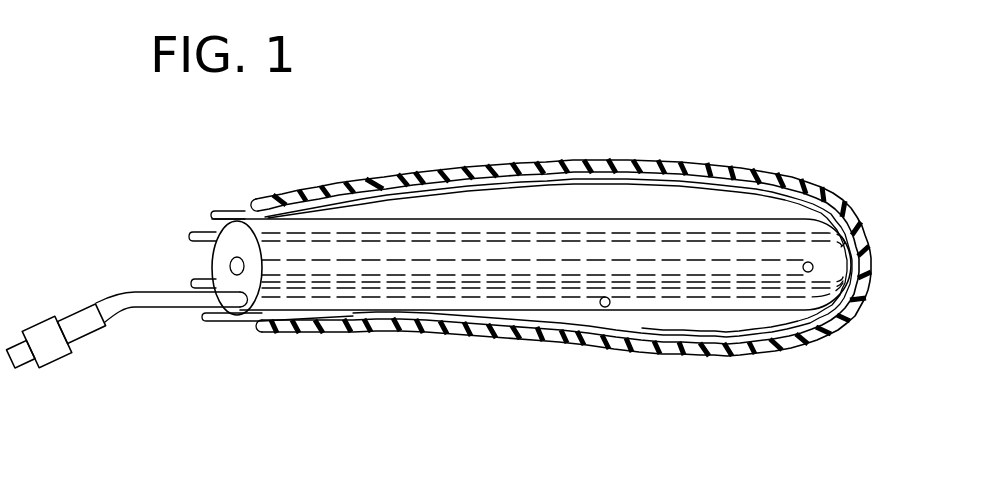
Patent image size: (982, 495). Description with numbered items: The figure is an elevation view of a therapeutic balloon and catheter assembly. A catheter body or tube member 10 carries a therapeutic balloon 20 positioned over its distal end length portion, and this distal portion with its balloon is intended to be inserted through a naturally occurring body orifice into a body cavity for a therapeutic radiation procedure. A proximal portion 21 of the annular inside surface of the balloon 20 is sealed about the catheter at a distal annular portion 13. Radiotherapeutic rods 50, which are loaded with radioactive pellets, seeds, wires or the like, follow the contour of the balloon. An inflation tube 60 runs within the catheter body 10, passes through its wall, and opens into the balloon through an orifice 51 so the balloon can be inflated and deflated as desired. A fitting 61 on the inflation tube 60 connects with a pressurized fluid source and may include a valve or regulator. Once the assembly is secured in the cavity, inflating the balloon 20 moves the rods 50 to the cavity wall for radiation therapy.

The body or tube member 10 is at (643, 218).
The distal annular portion 13 is at (273, 252).
The therapeutic balloon 20 is at (436, 169).
The proximal portion 21 is at (303, 216).
The radiotherapeutic rods 50 is at (548, 172).
The orifice 51 is at (606, 307).
The inflation tube 60 is at (117, 305).
The fitting 61 is at (58, 347).